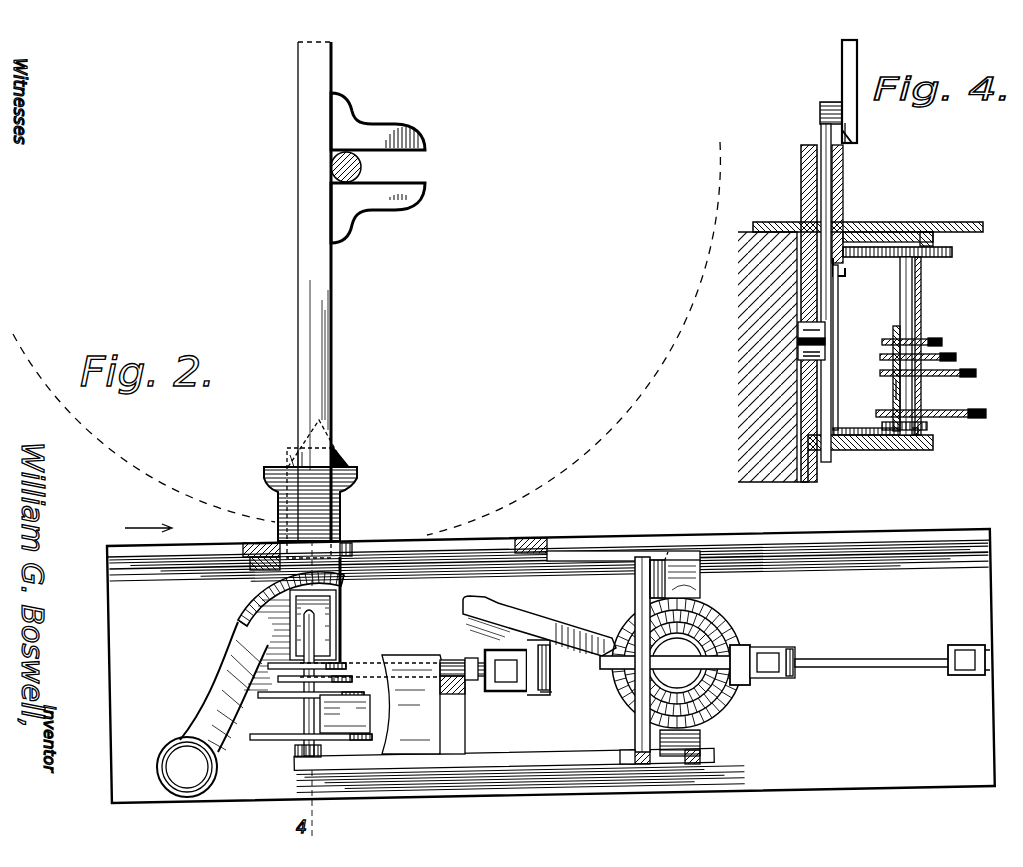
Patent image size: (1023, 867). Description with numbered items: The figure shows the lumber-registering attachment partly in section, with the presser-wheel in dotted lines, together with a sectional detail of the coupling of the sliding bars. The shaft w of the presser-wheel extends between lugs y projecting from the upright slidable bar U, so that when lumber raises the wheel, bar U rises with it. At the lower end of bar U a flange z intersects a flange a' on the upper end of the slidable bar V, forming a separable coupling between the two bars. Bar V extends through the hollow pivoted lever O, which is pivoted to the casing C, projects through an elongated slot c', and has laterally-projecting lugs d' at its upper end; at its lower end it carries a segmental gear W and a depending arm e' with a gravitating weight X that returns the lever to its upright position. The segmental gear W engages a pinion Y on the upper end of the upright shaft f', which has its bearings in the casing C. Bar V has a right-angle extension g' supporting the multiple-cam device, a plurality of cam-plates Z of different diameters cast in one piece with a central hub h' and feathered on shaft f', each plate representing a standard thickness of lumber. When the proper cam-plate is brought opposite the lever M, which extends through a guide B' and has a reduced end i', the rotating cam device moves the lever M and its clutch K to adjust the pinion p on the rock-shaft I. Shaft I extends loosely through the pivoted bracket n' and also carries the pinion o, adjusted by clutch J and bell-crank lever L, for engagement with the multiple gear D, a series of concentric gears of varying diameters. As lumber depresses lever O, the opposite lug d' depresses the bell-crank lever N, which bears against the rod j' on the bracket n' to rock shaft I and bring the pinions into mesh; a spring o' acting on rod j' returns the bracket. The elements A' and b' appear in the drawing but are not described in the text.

In FIG. 2, the upright slidable bar U is at (298, 247).
In FIG. 4, the upright slidable bar U is at (843, 68).
In FIG. 2, the lugs y is at (378, 168).
In FIG. 2, the shaft of presser-wheel w is at (361, 167).
In FIG. 2, the flange a' is at (305, 489).
In FIG. 4, the flange a' is at (814, 282).
In FIG. 2, the flange z is at (332, 458).
In FIG. 4, the flange z is at (853, 142).
In FIG. 2, the laterally-projecting lugs d' is at (311, 464).
In FIG. 2, the pivoted lever O is at (282, 504).
In FIG. 4, the pivoted lever O is at (801, 190).
In FIG. 2, the elongated slot c' is at (367, 542).
In FIG. 4, the elongated slot c' is at (888, 219).
In FIG. 2, the casing C is at (690, 545).
In FIG. 4, the casing C is at (908, 222).
In FIG. 2, the spring o' is at (660, 559).
In FIG. 2, the segmental gear W is at (236, 604).
In FIG. 4, the segmental gear W is at (848, 268).
In FIG. 2, the slidable bar V is at (344, 614).
In FIG. 4, the slidable bar V is at (839, 292).
In FIG. 2, the upright shaft f' is at (339, 683).
In FIG. 4, the upright shaft f' is at (922, 346).
In FIG. 2, the reduced end of lever M i' is at (392, 653).
In FIG. 2, the depending arm e' is at (236, 676).
In FIG. 2, the cam-plates Z is at (342, 664).
In FIG. 4, the cam-plates Z is at (945, 342).
In FIG. 2, the central hub h' is at (345, 714).
In FIG. 4, the central hub h' is at (877, 390).
In FIG. 2, the guide B' is at (423, 704).
In FIG. 2, the gravitating weight X is at (187, 767).
In FIG. 2, the lever M is at (468, 660).
In FIG. 2, the clutch K is at (500, 655).
In FIG. 2, the bell-crank lever N is at (570, 632).
In FIG. 2, the pivoted bracket n' is at (626, 660).
In FIG. 2, the pinion p is at (549, 695).
In FIG. 2, the rod j' is at (678, 579).
In FIG. 2, the multiple gear D is at (725, 633).
In FIG. 2, the rotatable shaft I is at (668, 675).
In FIG. 2, the clutch J is at (762, 651).
In FIG. 2, the bell-crank lever L is at (892, 667).
In FIG. 2, the pinion o is at (690, 729).
In FIG. 4, the pinion Y is at (953, 253).
In FIG. 4, the frame A' is at (770, 357).
In FIG. 4, the bracket b' is at (811, 341).
In FIG. 4, the right-angle extension g' is at (886, 420).